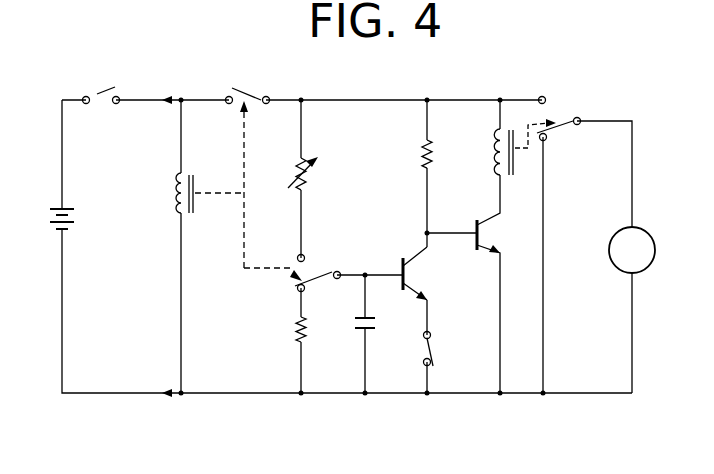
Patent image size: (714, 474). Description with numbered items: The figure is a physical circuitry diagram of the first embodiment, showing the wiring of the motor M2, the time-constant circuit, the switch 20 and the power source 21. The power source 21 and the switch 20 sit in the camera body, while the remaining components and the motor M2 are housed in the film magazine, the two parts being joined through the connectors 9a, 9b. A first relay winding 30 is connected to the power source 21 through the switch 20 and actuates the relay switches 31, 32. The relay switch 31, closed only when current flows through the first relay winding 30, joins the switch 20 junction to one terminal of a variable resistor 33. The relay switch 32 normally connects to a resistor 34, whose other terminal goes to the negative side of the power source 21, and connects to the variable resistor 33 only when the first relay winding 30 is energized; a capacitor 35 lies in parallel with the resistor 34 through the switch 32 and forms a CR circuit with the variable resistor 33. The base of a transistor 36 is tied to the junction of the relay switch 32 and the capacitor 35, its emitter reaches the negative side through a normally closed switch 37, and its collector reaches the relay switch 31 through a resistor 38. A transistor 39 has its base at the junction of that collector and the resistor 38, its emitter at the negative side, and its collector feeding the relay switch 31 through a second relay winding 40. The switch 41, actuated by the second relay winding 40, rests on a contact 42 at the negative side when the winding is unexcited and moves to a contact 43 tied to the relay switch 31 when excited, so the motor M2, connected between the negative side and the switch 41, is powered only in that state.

The switch 20 is at (98, 92).
The connector 9a is at (157, 98).
The relay switch 31 is at (241, 87).
The contact 43 is at (541, 96).
The switch 41 is at (572, 118).
The contact 42 is at (548, 140).
The first relay winding 30 is at (196, 184).
The variable resistor 33 is at (311, 184).
The relay switch 32 is at (328, 267).
The resistor 34 is at (291, 329).
The capacitor 35 is at (352, 328).
The transistor 36 is at (414, 281).
The switch 37 is at (434, 351).
The resistor 38 is at (433, 155).
The transistor 39 is at (488, 247).
The second relay winding 40 is at (513, 165).
The power source 21 is at (76, 214).
The connector 9b is at (165, 389).
The electric motor M2 is at (632, 250).